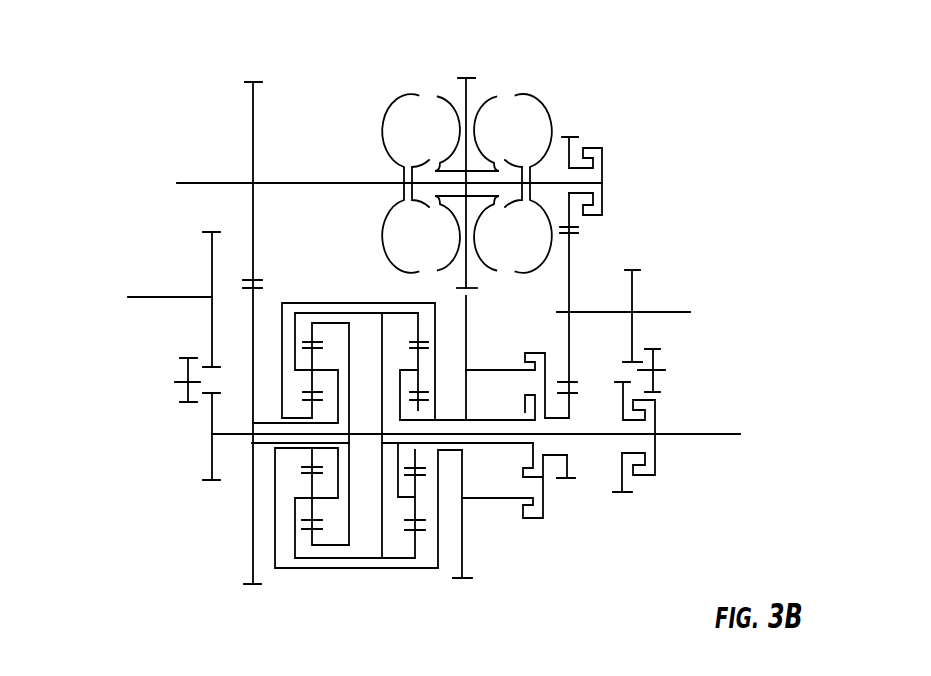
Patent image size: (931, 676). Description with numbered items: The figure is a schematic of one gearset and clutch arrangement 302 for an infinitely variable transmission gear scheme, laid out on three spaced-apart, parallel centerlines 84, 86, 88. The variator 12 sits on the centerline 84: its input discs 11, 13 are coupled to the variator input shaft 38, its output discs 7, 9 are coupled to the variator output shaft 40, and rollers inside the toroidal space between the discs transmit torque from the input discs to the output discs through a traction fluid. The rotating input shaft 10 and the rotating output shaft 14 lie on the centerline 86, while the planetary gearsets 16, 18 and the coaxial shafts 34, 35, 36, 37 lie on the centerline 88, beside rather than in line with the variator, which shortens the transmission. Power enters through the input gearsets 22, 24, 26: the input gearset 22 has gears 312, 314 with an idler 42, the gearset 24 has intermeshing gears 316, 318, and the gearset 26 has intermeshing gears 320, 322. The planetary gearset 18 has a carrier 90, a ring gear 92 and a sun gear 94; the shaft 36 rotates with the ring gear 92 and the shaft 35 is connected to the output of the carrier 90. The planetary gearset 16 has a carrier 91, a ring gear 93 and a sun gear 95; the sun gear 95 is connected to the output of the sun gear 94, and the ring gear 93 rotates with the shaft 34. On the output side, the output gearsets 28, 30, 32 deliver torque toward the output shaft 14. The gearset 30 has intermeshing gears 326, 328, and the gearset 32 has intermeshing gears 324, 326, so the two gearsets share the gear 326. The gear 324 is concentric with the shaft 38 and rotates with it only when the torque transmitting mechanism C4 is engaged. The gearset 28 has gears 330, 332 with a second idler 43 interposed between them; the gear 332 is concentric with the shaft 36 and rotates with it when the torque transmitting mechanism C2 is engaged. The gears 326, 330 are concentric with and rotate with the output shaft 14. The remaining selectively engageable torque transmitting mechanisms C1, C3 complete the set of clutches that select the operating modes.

The gearset and clutch arrangement 302 is at (124, 66).
The centerline 84 is at (165, 180).
The centerline 86 is at (104, 298).
The centerline 88 is at (180, 453).
The variator input shaft 38 is at (315, 182).
The gear 316 is at (255, 230).
The gear 318 is at (253, 365).
The input shaft 10 is at (187, 297).
The gear 312 is at (212, 323).
The idler 42 is at (175, 409).
The gear 314 is at (212, 422).
The shaft 34 is at (237, 433).
The input gearset 22 is at (208, 496).
The input gearset 24 is at (246, 590).
The planetary gearset 16 is at (316, 576).
The sun gear 95 is at (312, 460).
The planetary gearset 18 is at (413, 572).
The input gearset 26 is at (463, 596).
The output gearset 30 is at (560, 499).
The gear 328 is at (567, 472).
The output gearset 28 is at (616, 502).
The torque transmitting mechanism C2 is at (652, 461).
The shaft 36 is at (577, 433).
The gear 332 is at (618, 400).
The idler 43 is at (662, 368).
The gear 330 is at (635, 290).
The output shaft 14 is at (685, 312).
The gear 326 is at (569, 277).
The gear 324 is at (569, 221).
The torque transmitting mechanism C4 is at (587, 166).
The output gearset 32 is at (569, 128).
The variator 12 is at (481, 64).
The gear 320 is at (468, 275).
The gear 322 is at (468, 305).
The input disc 11 is at (387, 92).
The output disc 7 is at (441, 156).
The output disc 9 is at (485, 154).
The input disc 13 is at (540, 93).
The variator output shaft 40 is at (484, 196).
The carrier 91 is at (333, 368).
The ring gear 93 is at (357, 352).
The carrier 90 is at (400, 390).
The ring gear 92 is at (418, 326).
The sun gear 94 is at (418, 412).
The shaft 35 is at (473, 419).
The torque transmitting mechanism C1 is at (521, 405).
The shaft 37 is at (502, 370).
The torque transmitting mechanism C3 is at (525, 373).